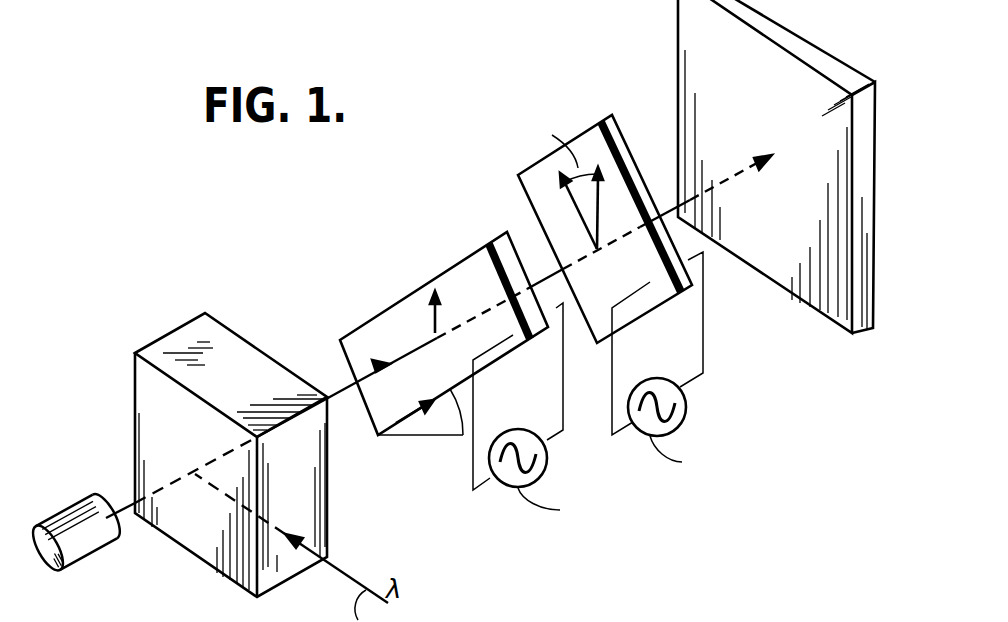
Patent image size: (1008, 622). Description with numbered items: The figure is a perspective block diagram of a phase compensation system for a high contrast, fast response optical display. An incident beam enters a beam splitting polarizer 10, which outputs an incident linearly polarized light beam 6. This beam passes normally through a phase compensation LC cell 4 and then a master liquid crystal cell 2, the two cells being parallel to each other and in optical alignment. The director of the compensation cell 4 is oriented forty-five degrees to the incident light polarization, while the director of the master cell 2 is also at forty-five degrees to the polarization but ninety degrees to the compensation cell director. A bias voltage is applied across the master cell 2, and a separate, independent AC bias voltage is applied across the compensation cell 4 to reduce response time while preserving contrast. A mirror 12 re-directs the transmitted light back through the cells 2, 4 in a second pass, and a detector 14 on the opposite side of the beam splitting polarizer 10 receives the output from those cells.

The detector 14 is at (66, 514).
The beam splitting polarizer 10 is at (172, 332).
The incident linearly polarized light beam 6 is at (328, 392).
The phase compensation LC cell 4 is at (437, 276).
The master liquid crystal cell 2 is at (588, 131).
The mirror 12 is at (677, 80).